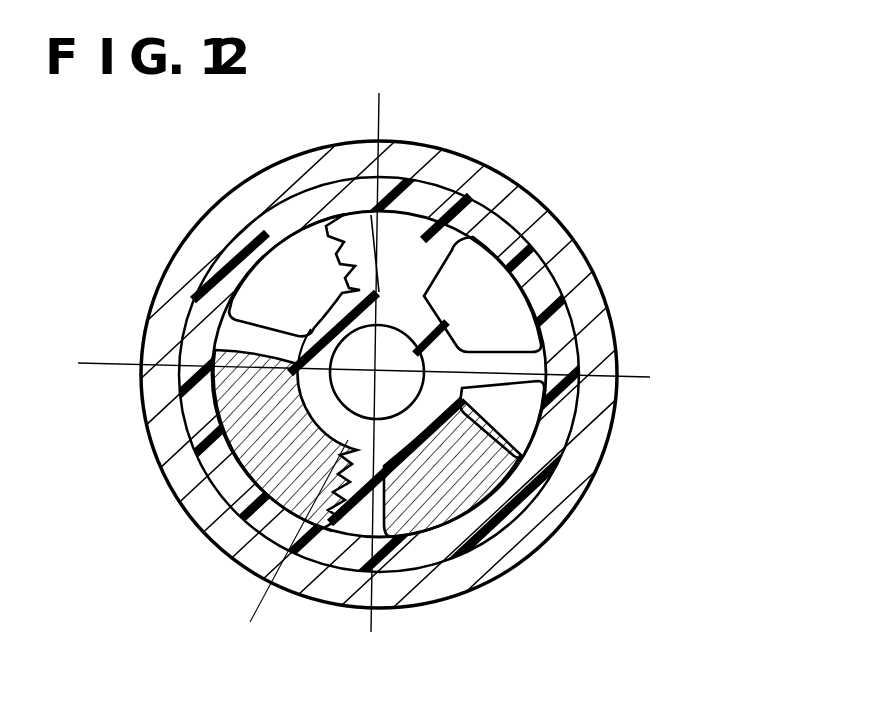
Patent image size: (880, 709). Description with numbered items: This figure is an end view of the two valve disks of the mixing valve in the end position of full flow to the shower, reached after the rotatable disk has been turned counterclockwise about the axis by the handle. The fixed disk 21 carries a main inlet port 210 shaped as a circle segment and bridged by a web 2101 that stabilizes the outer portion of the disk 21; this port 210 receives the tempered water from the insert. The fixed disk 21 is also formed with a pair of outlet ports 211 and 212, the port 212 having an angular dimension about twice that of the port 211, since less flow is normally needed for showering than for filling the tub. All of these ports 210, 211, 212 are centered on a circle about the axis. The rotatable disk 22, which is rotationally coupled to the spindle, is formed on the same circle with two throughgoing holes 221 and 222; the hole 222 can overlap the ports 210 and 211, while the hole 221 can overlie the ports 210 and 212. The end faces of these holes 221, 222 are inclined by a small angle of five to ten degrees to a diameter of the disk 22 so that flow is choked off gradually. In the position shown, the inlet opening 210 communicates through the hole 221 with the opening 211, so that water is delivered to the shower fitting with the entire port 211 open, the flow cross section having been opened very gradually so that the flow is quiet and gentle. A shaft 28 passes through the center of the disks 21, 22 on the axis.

The fixed disk 21 is at (335, 162).
The disk 22 is at (154, 385).
The rotor shaft 28 is at (352, 362).
The main inlet port 210 is at (515, 318).
The hole 222 is at (517, 417).
The web 2101 is at (510, 371).
The port 211 is at (271, 272).
The port 212 is at (208, 534).
The hole 221 is at (390, 340).